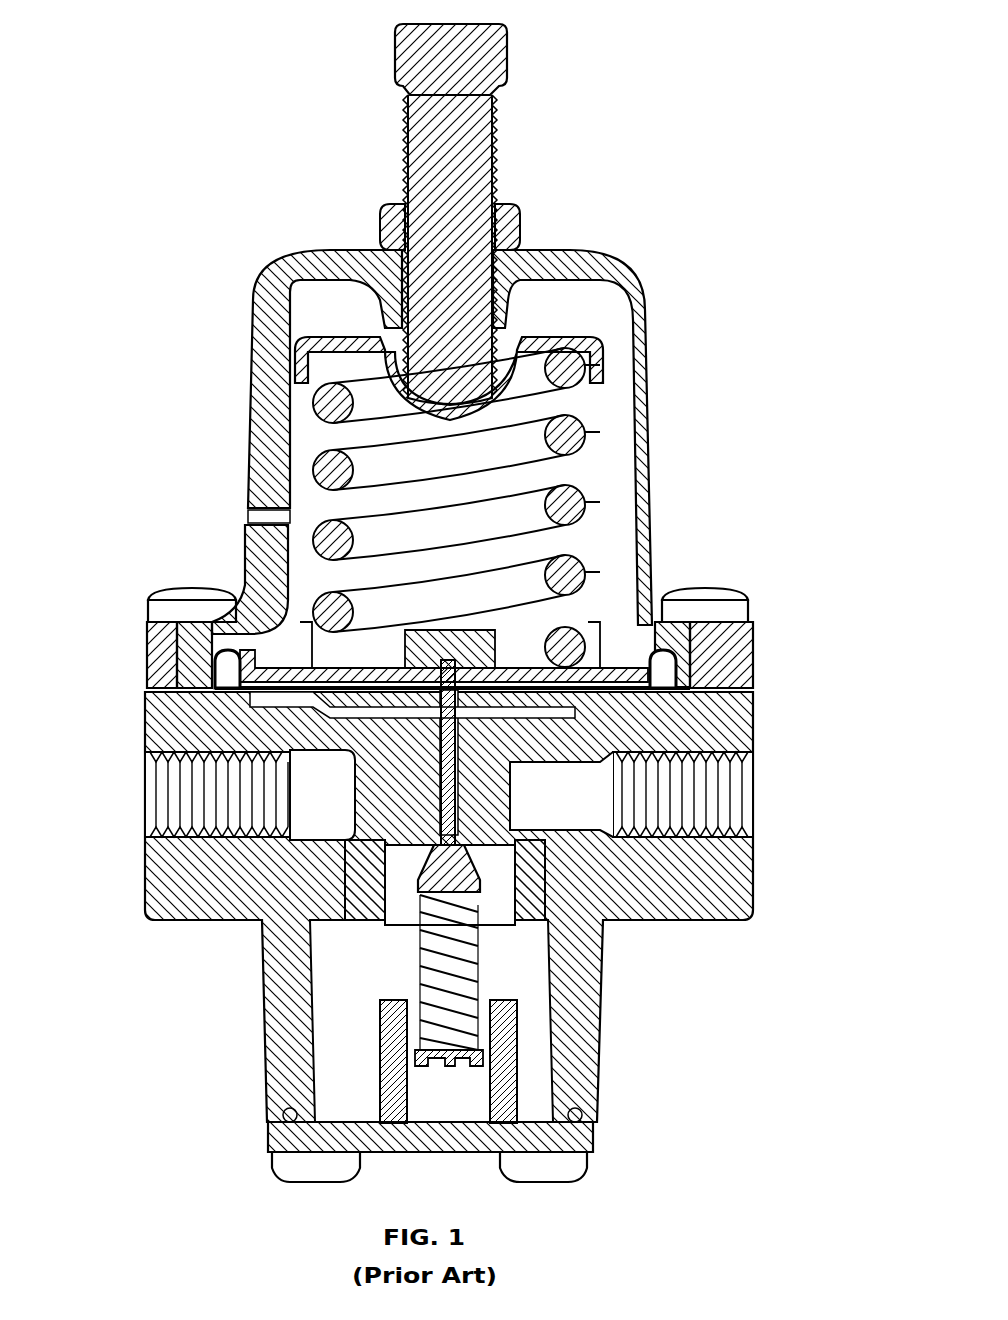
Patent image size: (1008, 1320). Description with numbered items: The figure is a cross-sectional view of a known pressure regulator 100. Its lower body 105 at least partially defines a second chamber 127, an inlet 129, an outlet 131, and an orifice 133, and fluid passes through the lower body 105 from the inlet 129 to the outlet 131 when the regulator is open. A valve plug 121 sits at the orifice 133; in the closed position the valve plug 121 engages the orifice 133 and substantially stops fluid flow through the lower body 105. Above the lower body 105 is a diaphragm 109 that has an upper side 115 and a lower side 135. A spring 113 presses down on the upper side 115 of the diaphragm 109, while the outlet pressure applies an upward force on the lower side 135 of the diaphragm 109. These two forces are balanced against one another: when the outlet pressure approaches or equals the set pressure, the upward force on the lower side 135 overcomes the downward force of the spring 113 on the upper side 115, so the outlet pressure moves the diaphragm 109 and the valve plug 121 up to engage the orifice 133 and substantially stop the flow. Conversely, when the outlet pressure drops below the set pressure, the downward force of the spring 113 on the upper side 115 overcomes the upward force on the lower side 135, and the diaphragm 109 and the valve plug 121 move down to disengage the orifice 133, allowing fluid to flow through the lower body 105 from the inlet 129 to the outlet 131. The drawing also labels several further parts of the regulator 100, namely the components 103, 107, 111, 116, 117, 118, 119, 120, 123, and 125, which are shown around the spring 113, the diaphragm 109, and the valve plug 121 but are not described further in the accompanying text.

The pressure regulator 100 is at (262, 42).
The bonnet 103 is at (650, 540).
The lower body 105 is at (742, 872).
The fasteners 107 is at (192, 588).
The diaphragm 109 is at (690, 690).
The spring chamber 111 is at (600, 470).
The spring 113 is at (600, 432).
The upper side 115 is at (628, 640).
The diaphragm edge 116 is at (212, 635).
The adjusting screw 117 is at (500, 130).
The lock nut 118 is at (430, 250).
The spring seat 119 is at (545, 335).
The vent 120 is at (252, 515).
The valve plug 121 is at (437, 862).
The flow passage 123 is at (460, 800).
The valve spring 125 is at (420, 980).
The second chamber 127 is at (437, 812).
The inlet 129 is at (170, 795).
The outlet 131 is at (730, 830).
The orifice 133 is at (413, 843).
The lower side 135 is at (255, 700).